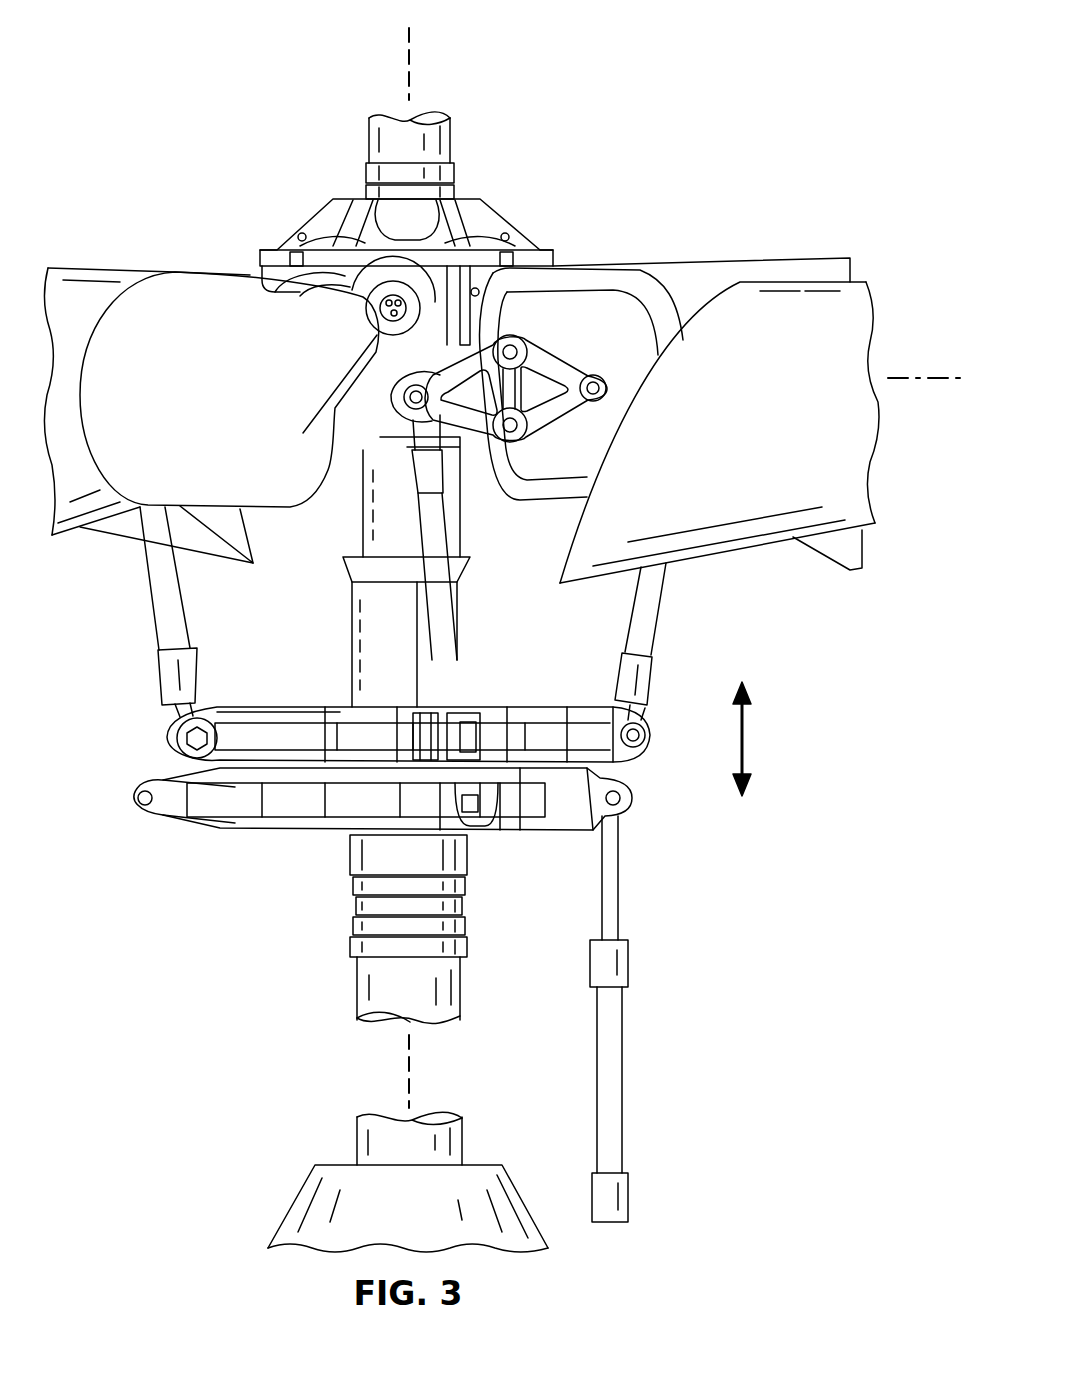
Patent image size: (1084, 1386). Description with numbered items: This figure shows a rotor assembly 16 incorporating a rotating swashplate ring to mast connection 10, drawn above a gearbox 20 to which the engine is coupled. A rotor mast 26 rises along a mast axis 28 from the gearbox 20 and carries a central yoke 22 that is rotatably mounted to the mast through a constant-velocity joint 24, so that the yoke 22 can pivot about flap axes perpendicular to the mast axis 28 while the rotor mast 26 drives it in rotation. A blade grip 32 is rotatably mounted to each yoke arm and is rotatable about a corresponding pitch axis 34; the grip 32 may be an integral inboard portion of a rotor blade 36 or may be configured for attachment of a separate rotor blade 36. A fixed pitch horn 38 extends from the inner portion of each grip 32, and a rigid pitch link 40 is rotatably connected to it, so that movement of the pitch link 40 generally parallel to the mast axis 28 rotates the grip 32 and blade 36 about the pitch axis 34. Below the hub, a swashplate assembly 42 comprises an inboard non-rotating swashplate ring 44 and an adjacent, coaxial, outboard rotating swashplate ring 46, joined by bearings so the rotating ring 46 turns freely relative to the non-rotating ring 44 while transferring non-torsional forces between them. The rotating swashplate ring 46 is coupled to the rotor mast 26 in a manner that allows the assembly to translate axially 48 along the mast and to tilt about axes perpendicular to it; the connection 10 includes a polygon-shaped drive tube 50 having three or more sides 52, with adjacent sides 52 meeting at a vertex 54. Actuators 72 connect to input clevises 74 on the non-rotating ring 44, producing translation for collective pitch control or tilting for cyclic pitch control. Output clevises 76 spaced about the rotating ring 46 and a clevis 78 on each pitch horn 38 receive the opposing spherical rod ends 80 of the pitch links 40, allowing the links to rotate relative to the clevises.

The rotating swashplate ring to mast connection 10 is at (333, 632).
The rotor assembly 16 is at (568, 56).
The gearbox 20 is at (357, 1130).
The central yoke 22 is at (347, 437).
The constant-velocity (CV) joint 24 is at (318, 206).
The rotor mast 26 is at (358, 996).
The mast axis 28 is at (404, 1044).
The blade grip 32 is at (574, 300).
The pitch axis 34 is at (893, 378).
The rotor blade 36 is at (870, 453).
The pitch horn 38 is at (554, 400).
The pitch link 40 is at (440, 545).
The swashplate assembly 42 is at (363, 838).
The non-rotating swashplate ring 44 is at (213, 800).
The rotating swashplate ring 46 is at (258, 735).
The axial translation 48 is at (746, 740).
The polygon-shaped drive tube 50 is at (350, 607).
The sides 52 is at (358, 634).
The vertex 54 is at (404, 852).
The actuators 72 is at (623, 1078).
The input clevises 74 is at (500, 805).
The output clevises 76 is at (472, 752).
The clevis 78 is at (404, 386).
The spherical rod ends 80 is at (392, 405).